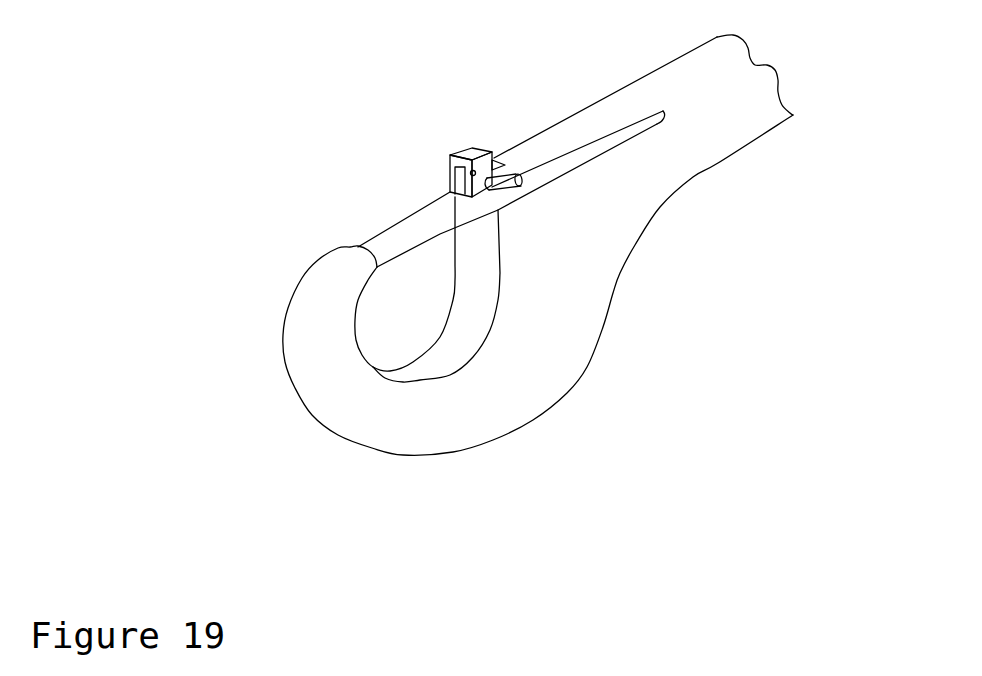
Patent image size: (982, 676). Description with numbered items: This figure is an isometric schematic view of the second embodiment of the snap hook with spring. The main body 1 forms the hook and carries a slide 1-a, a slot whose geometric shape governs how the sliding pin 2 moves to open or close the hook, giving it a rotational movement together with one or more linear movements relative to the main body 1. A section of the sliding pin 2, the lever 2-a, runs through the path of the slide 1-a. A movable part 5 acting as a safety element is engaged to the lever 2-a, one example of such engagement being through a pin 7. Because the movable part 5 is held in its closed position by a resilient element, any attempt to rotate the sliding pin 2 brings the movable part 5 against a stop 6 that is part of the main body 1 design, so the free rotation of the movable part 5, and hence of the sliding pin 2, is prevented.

The main body 1 is at (360, 405).
The slide 1-a is at (628, 135).
The sliding pin 2 is at (407, 233).
The lever 2-a is at (338, 149).
The movable part 5 is at (474, 152).
The stop 6 is at (632, 224).
The pin 7 is at (616, 297).